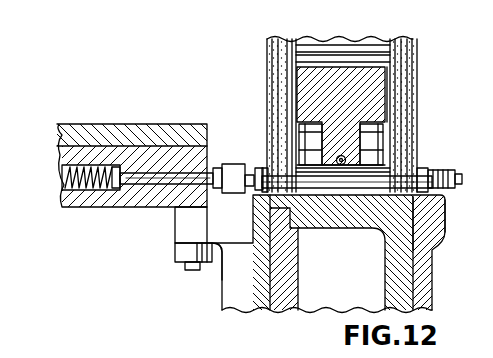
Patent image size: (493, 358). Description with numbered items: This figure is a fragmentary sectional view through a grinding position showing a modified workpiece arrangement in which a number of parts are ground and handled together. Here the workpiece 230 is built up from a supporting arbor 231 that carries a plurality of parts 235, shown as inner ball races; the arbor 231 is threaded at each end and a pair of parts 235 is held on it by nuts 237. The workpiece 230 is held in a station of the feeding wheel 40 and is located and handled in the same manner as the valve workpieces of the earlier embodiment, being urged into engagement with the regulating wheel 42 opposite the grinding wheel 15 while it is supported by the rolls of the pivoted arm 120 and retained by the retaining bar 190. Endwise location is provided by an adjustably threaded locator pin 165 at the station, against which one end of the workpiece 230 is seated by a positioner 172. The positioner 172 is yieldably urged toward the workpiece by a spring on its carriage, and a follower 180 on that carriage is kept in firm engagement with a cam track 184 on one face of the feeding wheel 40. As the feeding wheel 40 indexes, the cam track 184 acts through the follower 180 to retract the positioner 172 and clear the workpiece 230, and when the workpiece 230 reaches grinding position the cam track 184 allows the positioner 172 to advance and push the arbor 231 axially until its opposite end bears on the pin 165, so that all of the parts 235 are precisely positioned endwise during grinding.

The grinding wheel 15 is at (268, 45).
The arm 120 is at (367, 92).
The retaining bar 190 is at (343, 156).
The workpiece 230 is at (341, 196).
The parts 235 is at (283, 170).
The nuts 237 is at (258, 165).
The positioner 172 is at (244, 194).
The follower 180 is at (185, 253).
The feeding wheel 40 is at (423, 283).
The regulating wheel 42 is at (380, 196).
The cam track 184 is at (215, 265).
The supporting arbor 231 is at (410, 228).
The pin 165 is at (455, 190).